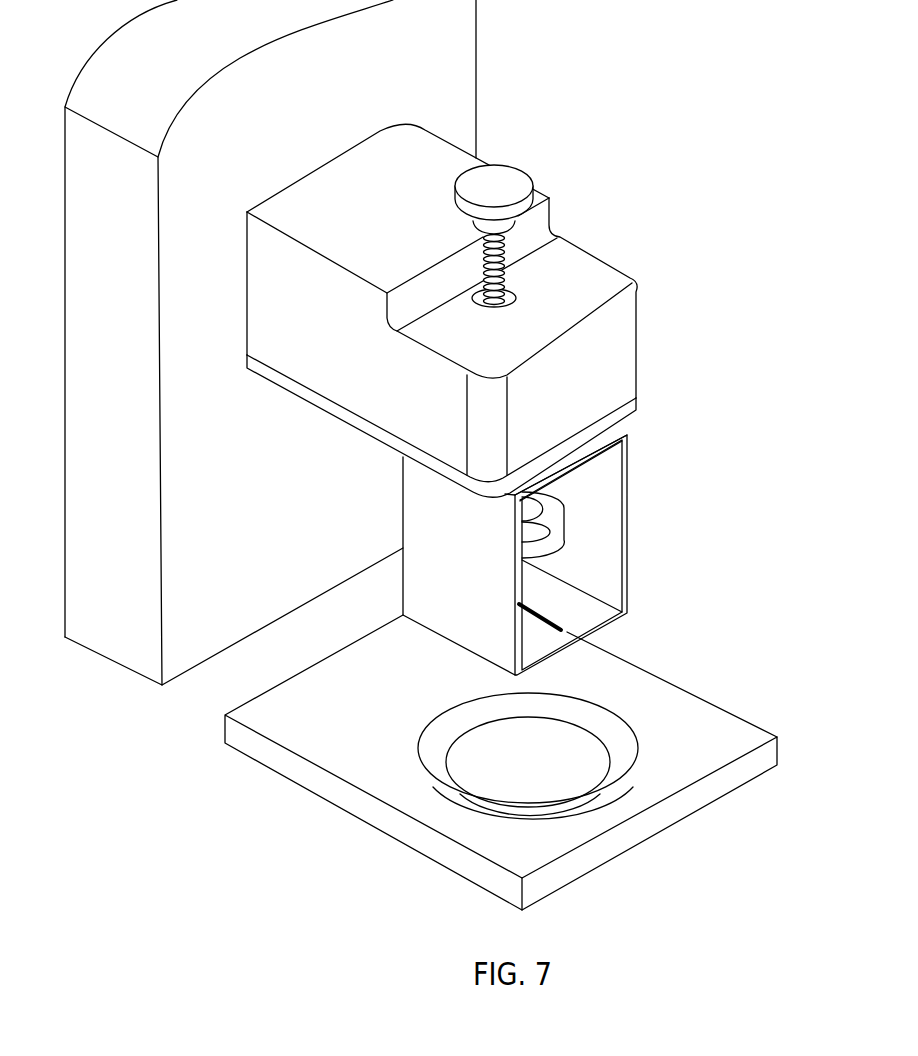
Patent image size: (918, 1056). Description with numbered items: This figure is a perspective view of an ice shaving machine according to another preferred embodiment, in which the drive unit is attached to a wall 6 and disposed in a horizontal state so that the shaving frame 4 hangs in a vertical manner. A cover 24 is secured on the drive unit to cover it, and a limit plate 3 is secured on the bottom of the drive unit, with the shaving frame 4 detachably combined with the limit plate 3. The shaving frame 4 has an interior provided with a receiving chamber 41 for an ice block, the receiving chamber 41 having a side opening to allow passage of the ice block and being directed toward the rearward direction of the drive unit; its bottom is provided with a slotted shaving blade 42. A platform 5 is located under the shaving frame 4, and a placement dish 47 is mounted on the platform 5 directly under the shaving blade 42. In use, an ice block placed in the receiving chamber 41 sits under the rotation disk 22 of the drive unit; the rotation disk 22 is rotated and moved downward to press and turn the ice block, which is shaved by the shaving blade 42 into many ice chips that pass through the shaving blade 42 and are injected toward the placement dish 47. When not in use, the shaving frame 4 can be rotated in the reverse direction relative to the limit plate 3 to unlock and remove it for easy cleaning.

The wall 6 is at (118, 643).
The cover 24 is at (308, 373).
The shaving frame 4 is at (438, 610).
The receiving chamber 41 is at (607, 587).
The limit plate 3 is at (618, 438).
The rotation disk 22 is at (550, 520).
The shaving blade 42 is at (585, 633).
The platform 5 is at (733, 738).
The placement dish 47 is at (578, 777).